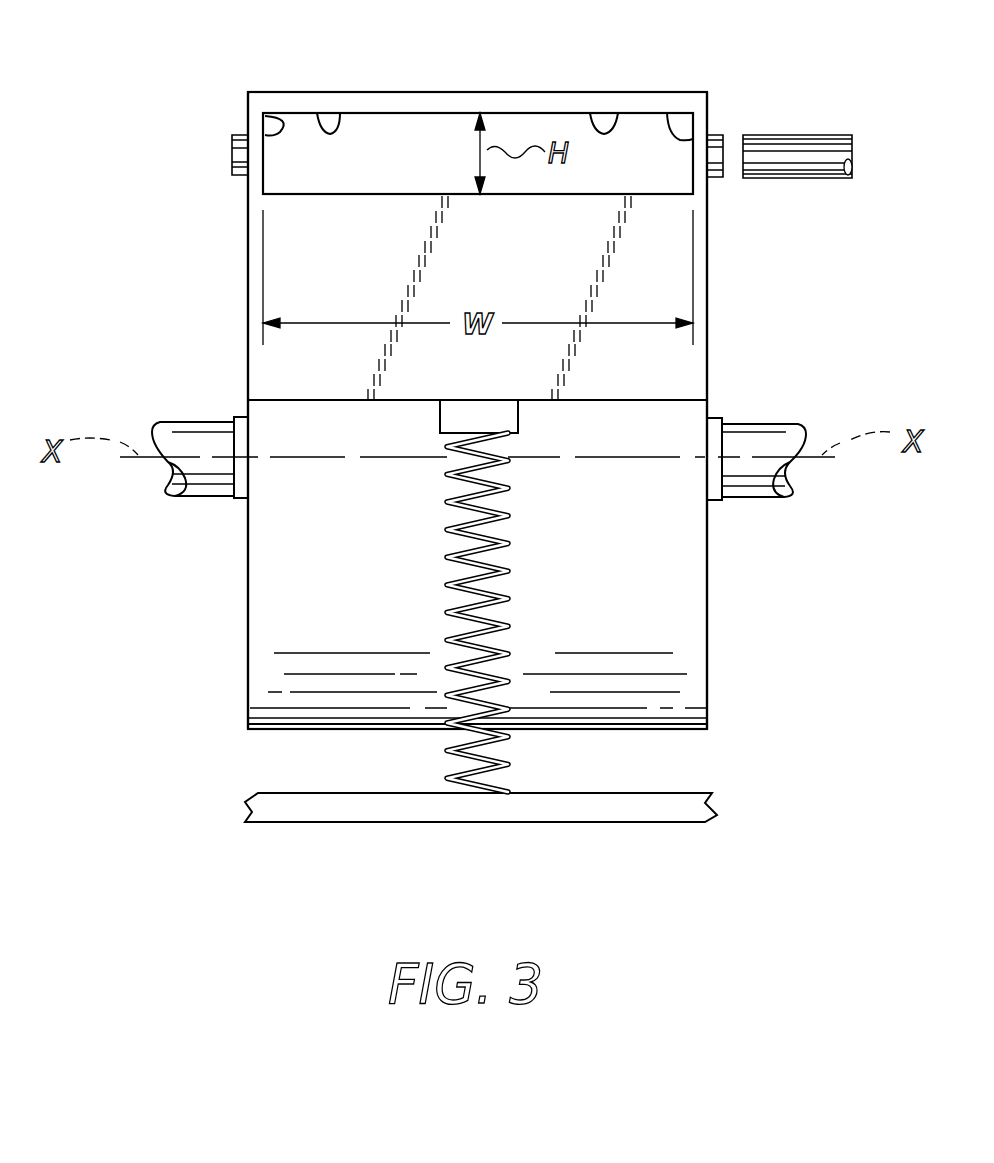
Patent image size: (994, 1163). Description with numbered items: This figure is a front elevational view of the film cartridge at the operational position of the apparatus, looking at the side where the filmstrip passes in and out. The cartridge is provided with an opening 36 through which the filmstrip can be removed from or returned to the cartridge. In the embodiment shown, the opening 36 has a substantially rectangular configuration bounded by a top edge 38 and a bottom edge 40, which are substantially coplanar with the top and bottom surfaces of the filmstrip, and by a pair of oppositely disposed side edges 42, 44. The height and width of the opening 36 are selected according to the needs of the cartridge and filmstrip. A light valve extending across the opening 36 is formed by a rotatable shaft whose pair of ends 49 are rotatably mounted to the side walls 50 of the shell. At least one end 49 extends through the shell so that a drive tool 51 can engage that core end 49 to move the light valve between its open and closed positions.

The opening 36 is at (590, 113).
The top edge 38 is at (317, 113).
The bottom edge 40 is at (395, 193).
The side edge 42 is at (263, 118).
The side edge 44 is at (677, 127).
The end 49 is at (232, 152).
The side wall 50 is at (248, 220).
The drive tool 51 is at (820, 133).